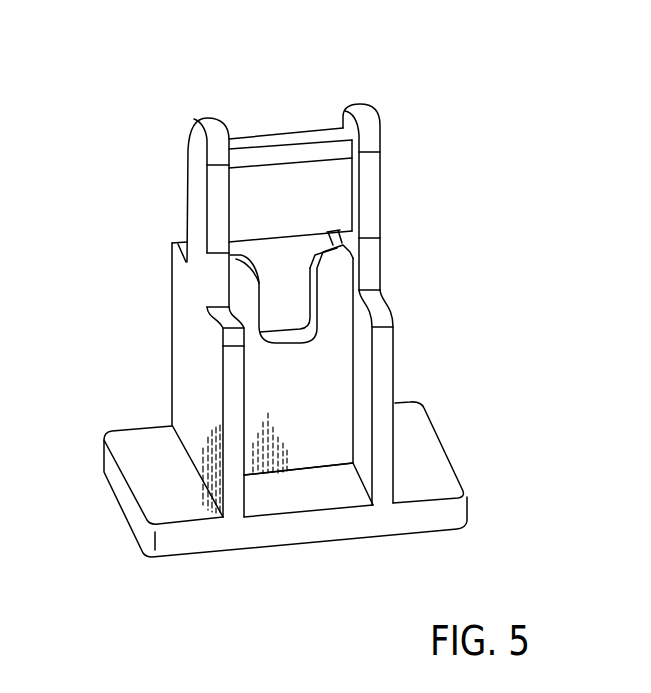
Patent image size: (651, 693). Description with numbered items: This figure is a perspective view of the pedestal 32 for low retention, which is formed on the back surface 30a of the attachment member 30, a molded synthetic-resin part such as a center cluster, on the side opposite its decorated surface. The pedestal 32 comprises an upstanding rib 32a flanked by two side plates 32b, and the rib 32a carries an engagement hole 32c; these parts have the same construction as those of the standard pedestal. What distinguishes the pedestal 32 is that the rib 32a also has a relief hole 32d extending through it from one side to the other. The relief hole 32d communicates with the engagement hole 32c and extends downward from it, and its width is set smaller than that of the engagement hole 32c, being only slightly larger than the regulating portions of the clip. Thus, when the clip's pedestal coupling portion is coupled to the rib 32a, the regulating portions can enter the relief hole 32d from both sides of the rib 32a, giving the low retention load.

The attachment member 30 is at (272, 470).
The back surface 30a is at (133, 443).
The pedestal for low retention 32 is at (404, 150).
The rib 32a is at (360, 256).
The side plates 32b is at (187, 307).
The engagement hole 32c is at (262, 259).
The relief hole 32d is at (286, 312).